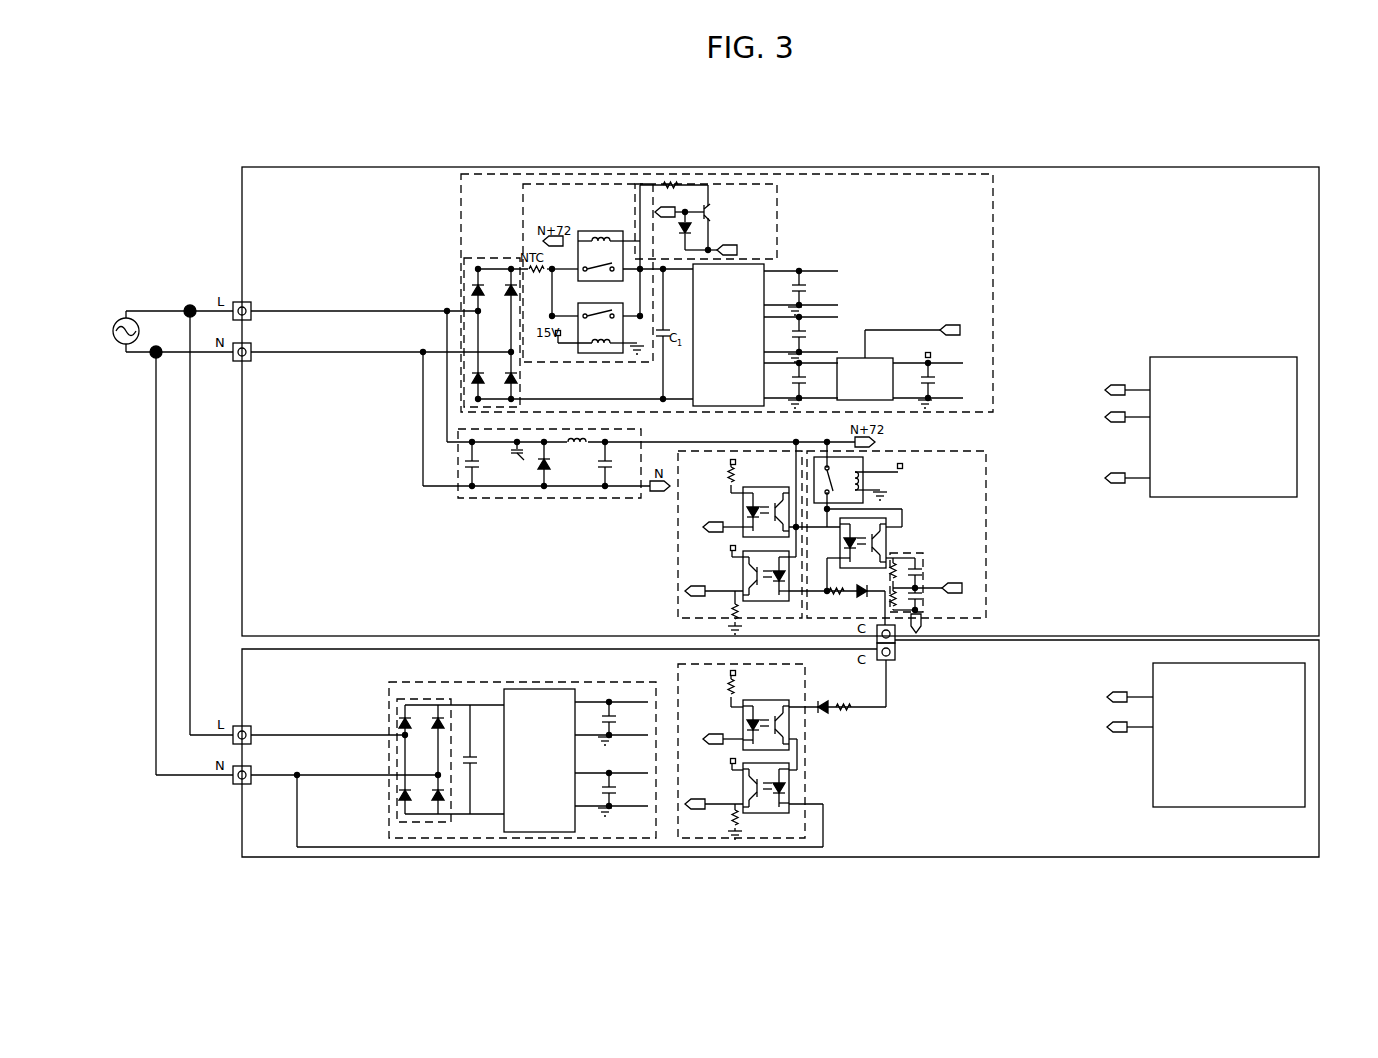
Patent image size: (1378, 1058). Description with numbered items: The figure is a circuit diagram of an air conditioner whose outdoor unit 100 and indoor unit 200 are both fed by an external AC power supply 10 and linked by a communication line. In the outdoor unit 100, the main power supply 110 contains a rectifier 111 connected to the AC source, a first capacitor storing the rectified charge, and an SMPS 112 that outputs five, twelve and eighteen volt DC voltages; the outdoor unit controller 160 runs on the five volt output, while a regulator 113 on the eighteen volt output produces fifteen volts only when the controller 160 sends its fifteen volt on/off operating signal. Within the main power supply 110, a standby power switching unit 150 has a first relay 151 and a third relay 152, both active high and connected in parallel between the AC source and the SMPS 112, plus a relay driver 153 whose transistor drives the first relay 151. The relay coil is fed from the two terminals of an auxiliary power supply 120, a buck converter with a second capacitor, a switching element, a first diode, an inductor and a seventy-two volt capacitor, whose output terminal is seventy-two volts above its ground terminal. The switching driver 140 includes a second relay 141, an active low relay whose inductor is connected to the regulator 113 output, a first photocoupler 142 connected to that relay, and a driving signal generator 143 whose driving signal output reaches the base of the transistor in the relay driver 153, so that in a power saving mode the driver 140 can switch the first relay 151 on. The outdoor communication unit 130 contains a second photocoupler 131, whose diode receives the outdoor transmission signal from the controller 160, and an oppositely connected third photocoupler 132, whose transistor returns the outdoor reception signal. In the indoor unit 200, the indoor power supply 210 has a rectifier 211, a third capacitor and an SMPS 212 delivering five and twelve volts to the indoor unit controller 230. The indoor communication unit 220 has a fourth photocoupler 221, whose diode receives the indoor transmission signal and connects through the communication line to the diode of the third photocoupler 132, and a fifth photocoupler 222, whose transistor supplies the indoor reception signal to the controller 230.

The external AC power supply 10 is at (122, 318).
The outdoor unit 100 is at (1243, 167).
The main power supply 110 is at (993, 263).
The rectifier 111 is at (462, 275).
The SMPS 112 is at (728, 406).
The regulator 113 is at (848, 358).
The auxiliary power supply 120 is at (478, 500).
The outdoor communication unit 130 is at (678, 527).
The second photocoupler 131 is at (765, 485).
The third photocoupler 132 is at (732, 593).
The switching driver 140 is at (986, 525).
The second relay 141 is at (866, 480).
The first photocoupler 142 is at (887, 536).
The driving signal generator 143 is at (923, 612).
The standby power switching unit 150 is at (777, 240).
The first relay 151 is at (593, 231).
The third relay 152 is at (592, 358).
The relay driver 153 is at (777, 202).
The outdoor unit controller 160 is at (1297, 428).
The indoor unit 200 is at (1155, 857).
The indoor power supply 210 is at (469, 838).
The rectifier 211 is at (416, 822).
The SMPS 212 is at (540, 832).
The indoor communication unit 220 is at (700, 838).
The fourth photocoupler 221 is at (790, 725).
The fifth photocoupler 222 is at (790, 785).
The indoor unit controller 230 is at (1305, 737).